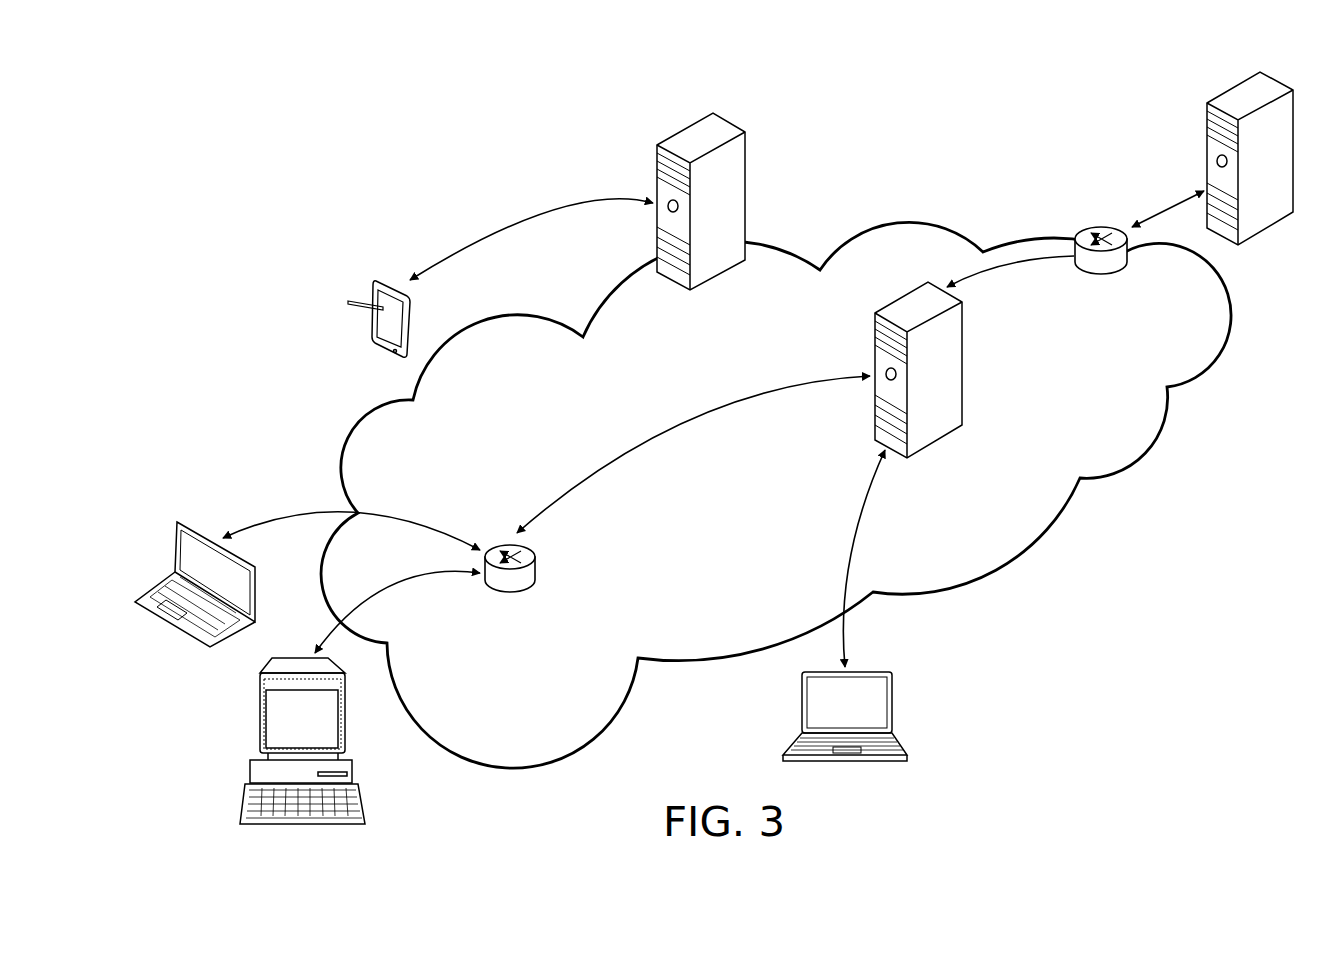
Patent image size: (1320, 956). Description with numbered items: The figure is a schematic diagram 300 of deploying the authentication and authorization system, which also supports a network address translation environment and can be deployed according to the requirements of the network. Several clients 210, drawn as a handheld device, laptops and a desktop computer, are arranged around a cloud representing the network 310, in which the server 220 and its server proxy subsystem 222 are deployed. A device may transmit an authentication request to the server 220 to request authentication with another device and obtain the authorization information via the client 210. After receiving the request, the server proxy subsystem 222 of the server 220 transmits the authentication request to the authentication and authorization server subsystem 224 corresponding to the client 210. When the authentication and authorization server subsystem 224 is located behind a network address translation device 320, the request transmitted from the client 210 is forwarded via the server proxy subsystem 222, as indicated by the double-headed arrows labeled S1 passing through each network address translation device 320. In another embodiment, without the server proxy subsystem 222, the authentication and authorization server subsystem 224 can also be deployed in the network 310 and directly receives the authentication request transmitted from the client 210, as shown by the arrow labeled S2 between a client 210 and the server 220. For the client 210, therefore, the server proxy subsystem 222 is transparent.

The schematic diagram 300 is at (975, 129).
The network 310 is at (900, 222).
The network address translation device 320 is at (495, 542).
The client 210 is at (387, 280).
The server 220 is at (682, 126).
The server proxy subsystem 222 is at (935, 446).
The authentication and authorization server subsystem 224 is at (1268, 236).
The step S1 is at (1190, 220).
The step S2 is at (520, 216).